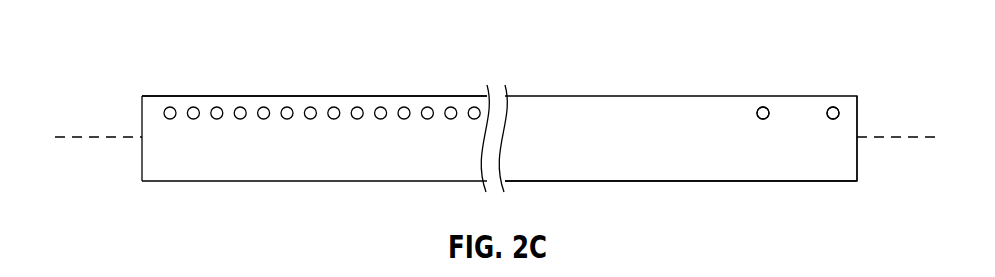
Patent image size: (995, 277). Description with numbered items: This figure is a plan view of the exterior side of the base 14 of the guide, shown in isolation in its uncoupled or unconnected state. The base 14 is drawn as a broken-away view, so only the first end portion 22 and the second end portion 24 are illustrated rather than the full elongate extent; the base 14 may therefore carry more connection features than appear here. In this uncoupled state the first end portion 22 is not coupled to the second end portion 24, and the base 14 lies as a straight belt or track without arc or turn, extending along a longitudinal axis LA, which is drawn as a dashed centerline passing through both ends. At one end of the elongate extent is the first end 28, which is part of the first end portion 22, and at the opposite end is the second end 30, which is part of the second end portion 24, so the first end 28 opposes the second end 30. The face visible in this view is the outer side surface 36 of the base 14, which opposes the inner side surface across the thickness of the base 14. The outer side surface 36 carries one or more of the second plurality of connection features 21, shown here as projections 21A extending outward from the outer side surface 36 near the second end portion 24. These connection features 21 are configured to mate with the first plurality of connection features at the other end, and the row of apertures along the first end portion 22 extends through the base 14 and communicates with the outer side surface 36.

The base 14 is at (847, 33).
The second plurality of connection features 21 is at (829, 107).
The projections 21A is at (798, 113).
The first end portion 22 is at (160, 70).
The second end portion 24 is at (854, 88).
The first end 28 is at (142, 106).
The second end 30 is at (857, 118).
The outer side surface 36 is at (608, 165).
The longitudinal axis LA is at (108, 137).